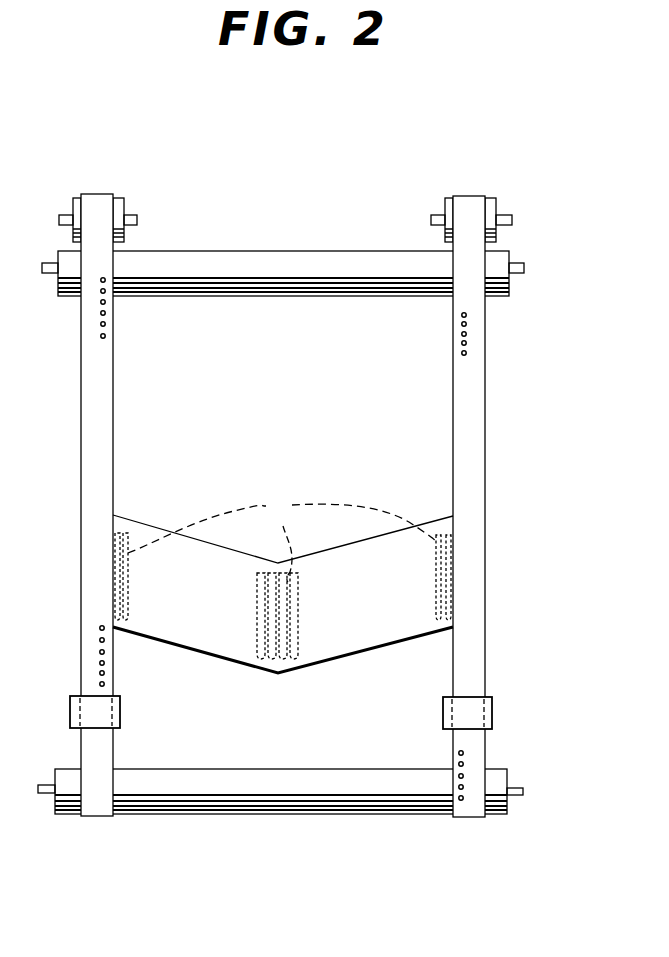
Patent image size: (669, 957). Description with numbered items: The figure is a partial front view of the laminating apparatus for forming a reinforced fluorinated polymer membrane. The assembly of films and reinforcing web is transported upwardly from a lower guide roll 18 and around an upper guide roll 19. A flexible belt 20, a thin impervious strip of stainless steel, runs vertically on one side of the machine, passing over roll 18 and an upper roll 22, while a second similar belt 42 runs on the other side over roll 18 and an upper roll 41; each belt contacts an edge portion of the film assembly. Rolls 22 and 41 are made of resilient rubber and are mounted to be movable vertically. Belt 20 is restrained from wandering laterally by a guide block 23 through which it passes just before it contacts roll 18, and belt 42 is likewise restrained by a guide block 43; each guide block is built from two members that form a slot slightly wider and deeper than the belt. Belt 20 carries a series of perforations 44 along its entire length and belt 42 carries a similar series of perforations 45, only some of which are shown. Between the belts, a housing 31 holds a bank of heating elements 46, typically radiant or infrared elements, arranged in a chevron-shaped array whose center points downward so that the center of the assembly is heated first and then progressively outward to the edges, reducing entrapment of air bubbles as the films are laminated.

The guide roll 18 is at (280, 800).
The guide roll 19 is at (284, 284).
The flexible belt 20 is at (470, 396).
The roll 22 is at (490, 210).
The guide block 23 is at (466, 710).
The housing 31 is at (345, 645).
The roll 41 is at (74, 204).
The belt 42 is at (90, 418).
The guide block 43 is at (98, 712).
The perforations 44 is at (467, 343).
The perforations 45 is at (100, 324).
The heating elements 46 is at (282, 542).